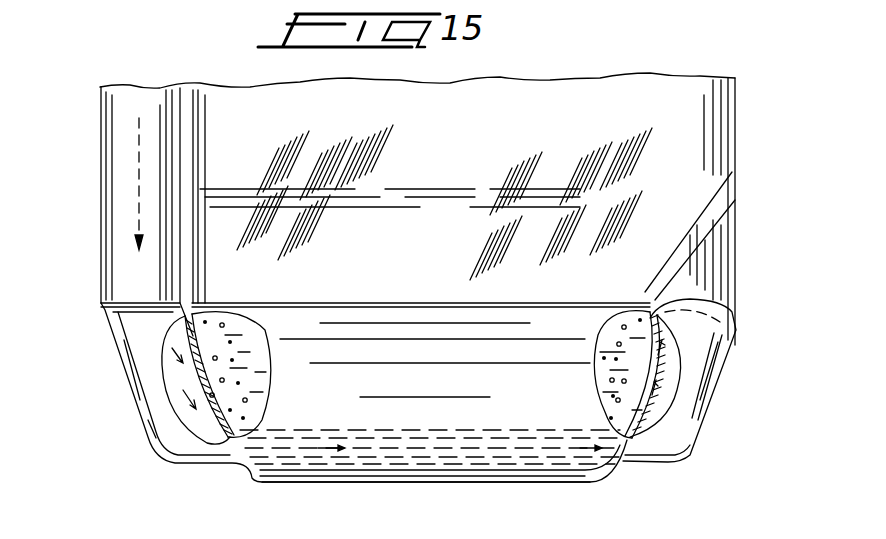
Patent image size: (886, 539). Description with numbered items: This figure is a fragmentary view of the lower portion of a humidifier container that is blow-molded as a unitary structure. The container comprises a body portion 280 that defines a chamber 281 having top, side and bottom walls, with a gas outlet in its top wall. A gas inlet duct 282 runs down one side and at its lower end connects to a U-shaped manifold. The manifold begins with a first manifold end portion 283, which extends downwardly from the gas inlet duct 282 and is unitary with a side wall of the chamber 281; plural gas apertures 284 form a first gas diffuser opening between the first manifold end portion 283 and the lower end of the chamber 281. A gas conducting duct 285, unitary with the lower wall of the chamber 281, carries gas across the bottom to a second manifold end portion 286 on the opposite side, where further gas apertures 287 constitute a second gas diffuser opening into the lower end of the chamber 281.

The body portion 280 is at (738, 108).
The chamber 281 is at (440, 144).
The gas inlet duct 282 is at (98, 245).
The first manifold end portion 283 is at (126, 398).
The gas apertures 284 is at (210, 336).
The gas conducting duct 285 is at (466, 483).
The second manifold end portion 286 is at (720, 308).
The gas apertures 287 is at (637, 343).